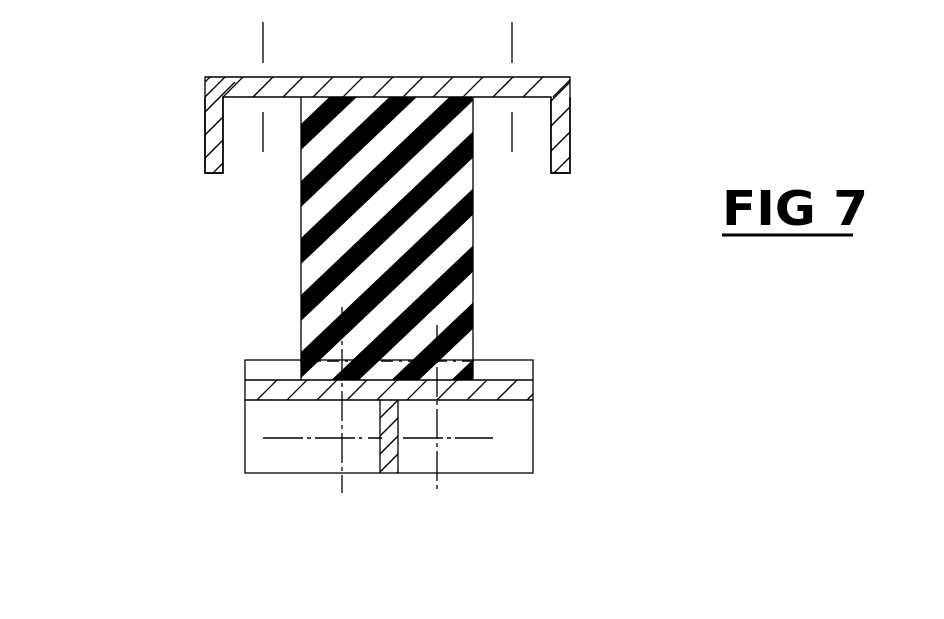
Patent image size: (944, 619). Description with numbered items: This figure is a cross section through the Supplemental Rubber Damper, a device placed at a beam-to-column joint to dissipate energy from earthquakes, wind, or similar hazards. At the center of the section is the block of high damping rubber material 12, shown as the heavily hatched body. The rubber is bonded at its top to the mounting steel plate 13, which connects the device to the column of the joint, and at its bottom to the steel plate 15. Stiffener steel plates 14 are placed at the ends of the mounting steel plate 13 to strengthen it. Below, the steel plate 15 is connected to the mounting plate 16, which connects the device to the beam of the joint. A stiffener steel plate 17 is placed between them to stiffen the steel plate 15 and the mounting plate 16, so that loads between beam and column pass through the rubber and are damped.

The high damping rubber material 12 is at (302, 250).
The mounting steel plate 13 is at (360, 77).
The stiffener steel plate 14 is at (204, 152).
The steel plate 15 is at (282, 400).
The mounting plate 16 is at (494, 360).
The stiffener steel plate 17 is at (397, 456).